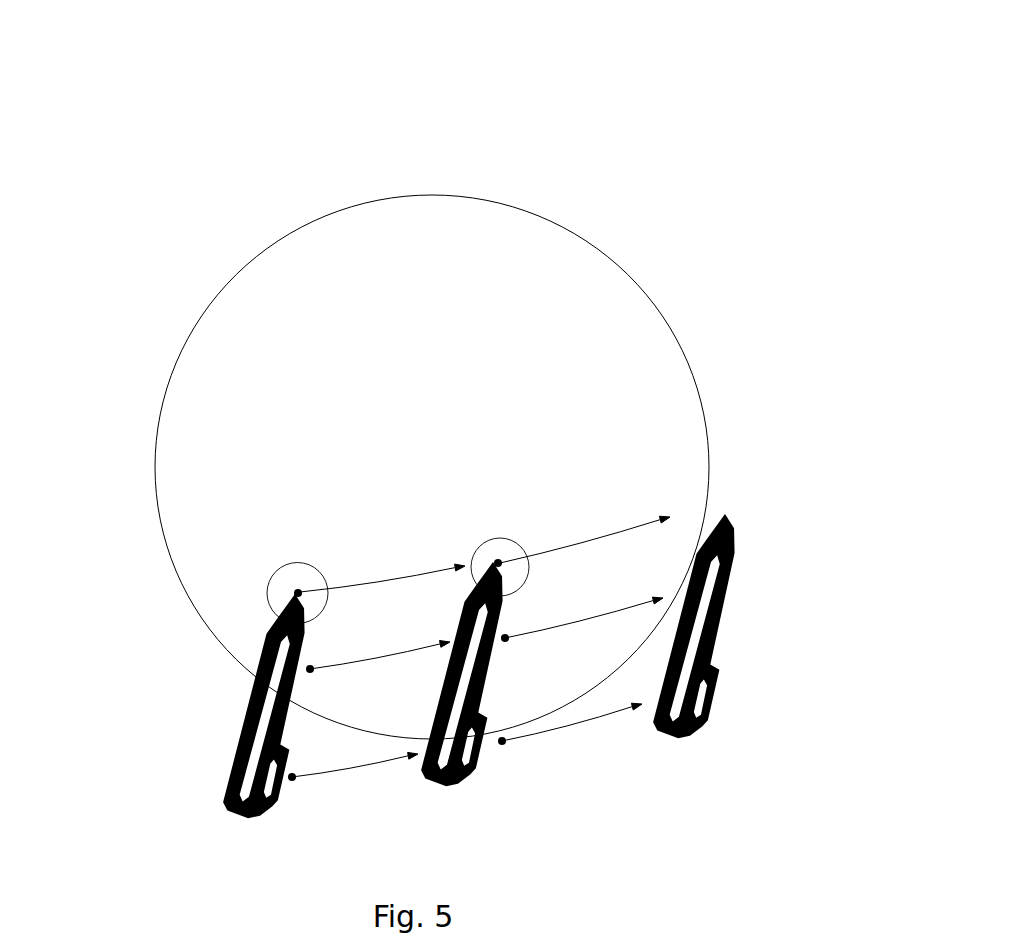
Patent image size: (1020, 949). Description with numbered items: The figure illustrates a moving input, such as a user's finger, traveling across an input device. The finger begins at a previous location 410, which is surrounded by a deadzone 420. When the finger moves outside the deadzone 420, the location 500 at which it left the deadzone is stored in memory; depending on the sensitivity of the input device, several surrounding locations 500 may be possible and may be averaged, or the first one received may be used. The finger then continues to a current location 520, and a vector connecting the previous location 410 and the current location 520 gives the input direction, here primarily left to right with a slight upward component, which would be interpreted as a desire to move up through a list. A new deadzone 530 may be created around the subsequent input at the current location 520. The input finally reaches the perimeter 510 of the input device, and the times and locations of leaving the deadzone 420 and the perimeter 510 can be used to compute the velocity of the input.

The previous location 410 is at (296, 594).
The deadzone 420 is at (298, 593).
The location at which the input left the deadzone 500 is at (323, 583).
The perimeter of the input device 510 is at (727, 513).
The current location 520 is at (500, 563).
The new deadzone 530 is at (488, 553).